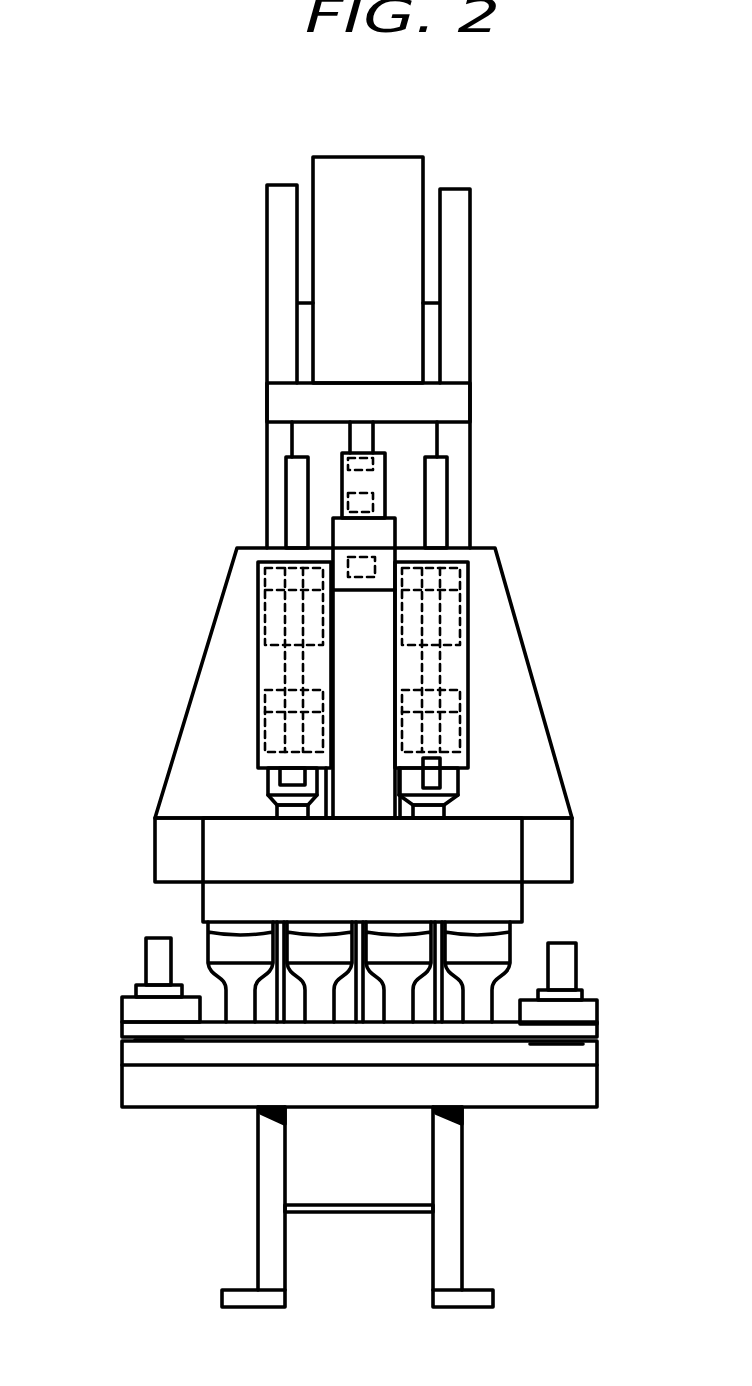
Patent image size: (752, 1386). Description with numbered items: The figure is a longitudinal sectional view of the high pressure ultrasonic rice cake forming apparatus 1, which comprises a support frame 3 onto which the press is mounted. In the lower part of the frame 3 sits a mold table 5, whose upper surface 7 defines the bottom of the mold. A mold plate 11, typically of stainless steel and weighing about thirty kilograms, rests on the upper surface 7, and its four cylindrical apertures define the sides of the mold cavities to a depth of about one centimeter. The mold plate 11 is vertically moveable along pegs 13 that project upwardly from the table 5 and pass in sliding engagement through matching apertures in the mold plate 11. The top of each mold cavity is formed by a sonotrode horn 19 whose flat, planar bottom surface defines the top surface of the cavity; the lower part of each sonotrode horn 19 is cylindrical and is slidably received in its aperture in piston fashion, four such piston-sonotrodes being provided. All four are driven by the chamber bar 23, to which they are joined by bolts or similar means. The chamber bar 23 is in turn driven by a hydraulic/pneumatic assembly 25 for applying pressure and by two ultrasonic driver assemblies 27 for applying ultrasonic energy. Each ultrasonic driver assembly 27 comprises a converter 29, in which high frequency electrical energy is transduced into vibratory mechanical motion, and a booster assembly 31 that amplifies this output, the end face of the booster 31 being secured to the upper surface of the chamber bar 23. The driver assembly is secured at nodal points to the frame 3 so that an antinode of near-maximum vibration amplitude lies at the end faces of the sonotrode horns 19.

The high pressure ultrasonic rice cake forming apparatus 1 is at (492, 203).
The support frame 3 is at (450, 447).
The mold table 5 is at (120, 1048).
The upper surface 7 is at (215, 1027).
The mold plate 11 is at (582, 1015).
The pegs 13 is at (558, 965).
The sonotrode horn 19 is at (513, 958).
The chamber bar 23 is at (488, 858).
The hydraulic/pneumatic assembly 25 is at (378, 450).
The ultrasonic driver assembly 27 is at (473, 630).
The converter 29 is at (458, 578).
The booster assembly 31 is at (465, 715).